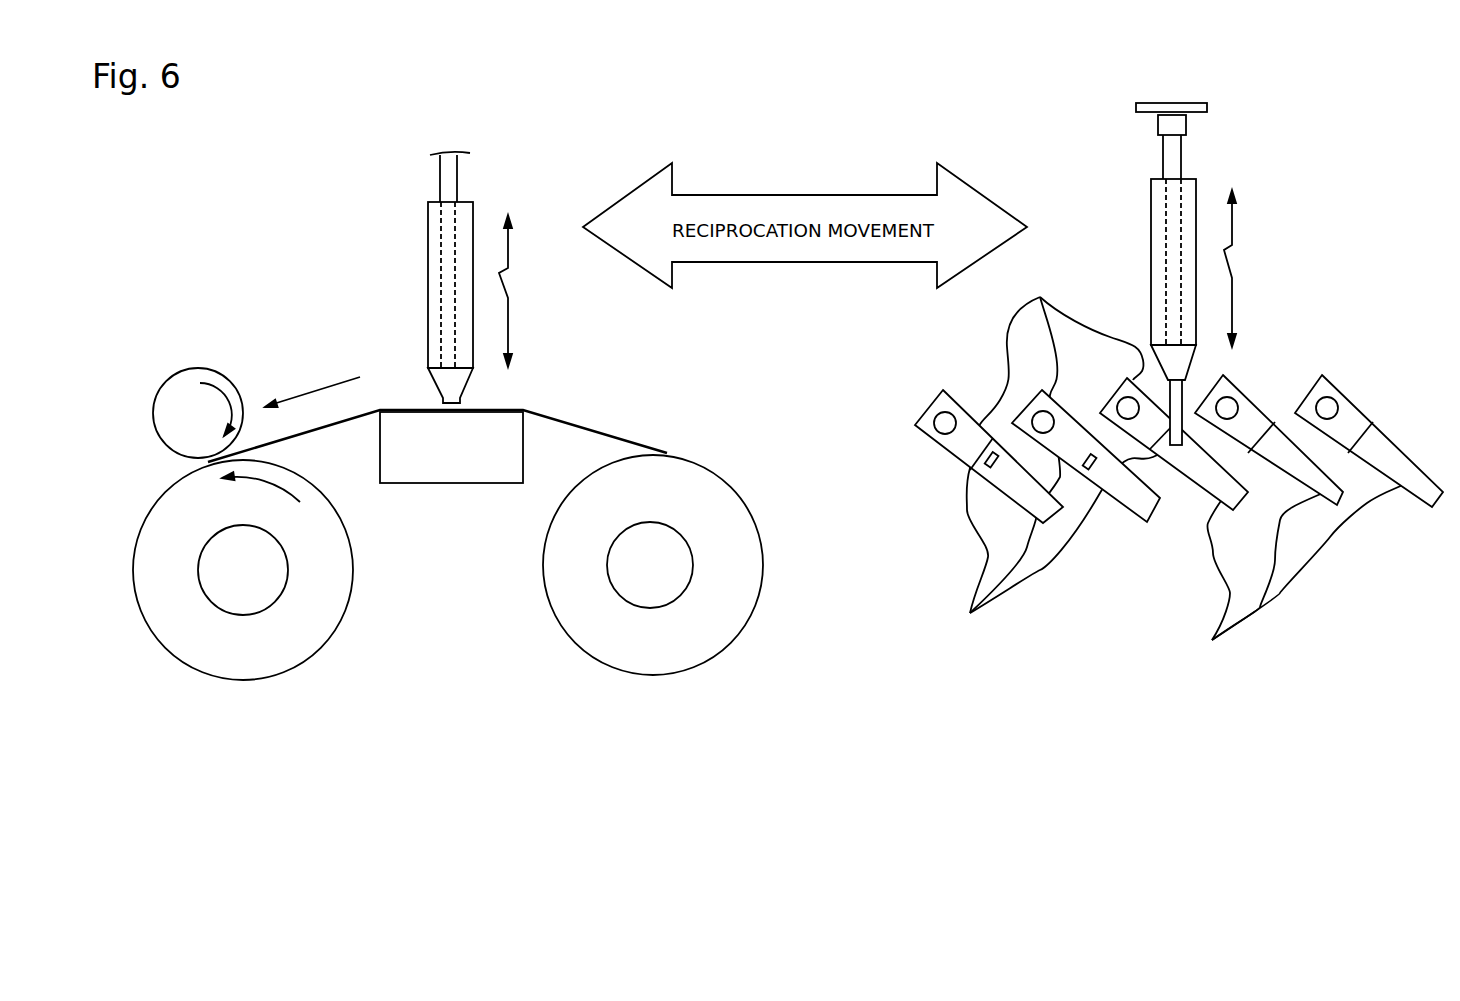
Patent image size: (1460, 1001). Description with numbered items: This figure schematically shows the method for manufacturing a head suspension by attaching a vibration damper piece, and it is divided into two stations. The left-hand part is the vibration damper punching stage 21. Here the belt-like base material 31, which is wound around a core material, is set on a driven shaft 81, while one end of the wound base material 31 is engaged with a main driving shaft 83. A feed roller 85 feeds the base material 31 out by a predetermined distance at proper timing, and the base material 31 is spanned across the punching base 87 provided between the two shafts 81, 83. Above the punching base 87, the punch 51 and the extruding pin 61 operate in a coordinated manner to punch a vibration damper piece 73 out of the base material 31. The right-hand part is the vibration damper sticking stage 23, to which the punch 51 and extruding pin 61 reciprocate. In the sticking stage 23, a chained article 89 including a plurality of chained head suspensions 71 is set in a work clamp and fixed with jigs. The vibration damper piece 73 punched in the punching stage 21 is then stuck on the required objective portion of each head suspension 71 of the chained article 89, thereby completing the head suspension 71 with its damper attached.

The vibration damper punching stage 21 is at (398, 707).
The vibration damper sticking stage 23 is at (1077, 662).
The base material 31 is at (570, 422).
The punch 51 is at (467, 228).
The extruding pin 61 is at (447, 178).
The head suspension 71 is at (1192, 471).
The vibration damper piece 73 is at (1065, 546).
The driven shaft 81 is at (652, 565).
The main driving shaft 83 is at (240, 572).
The feed roller 85 is at (188, 382).
The punching base 87 is at (460, 453).
The chained article 89 is at (1293, 355).